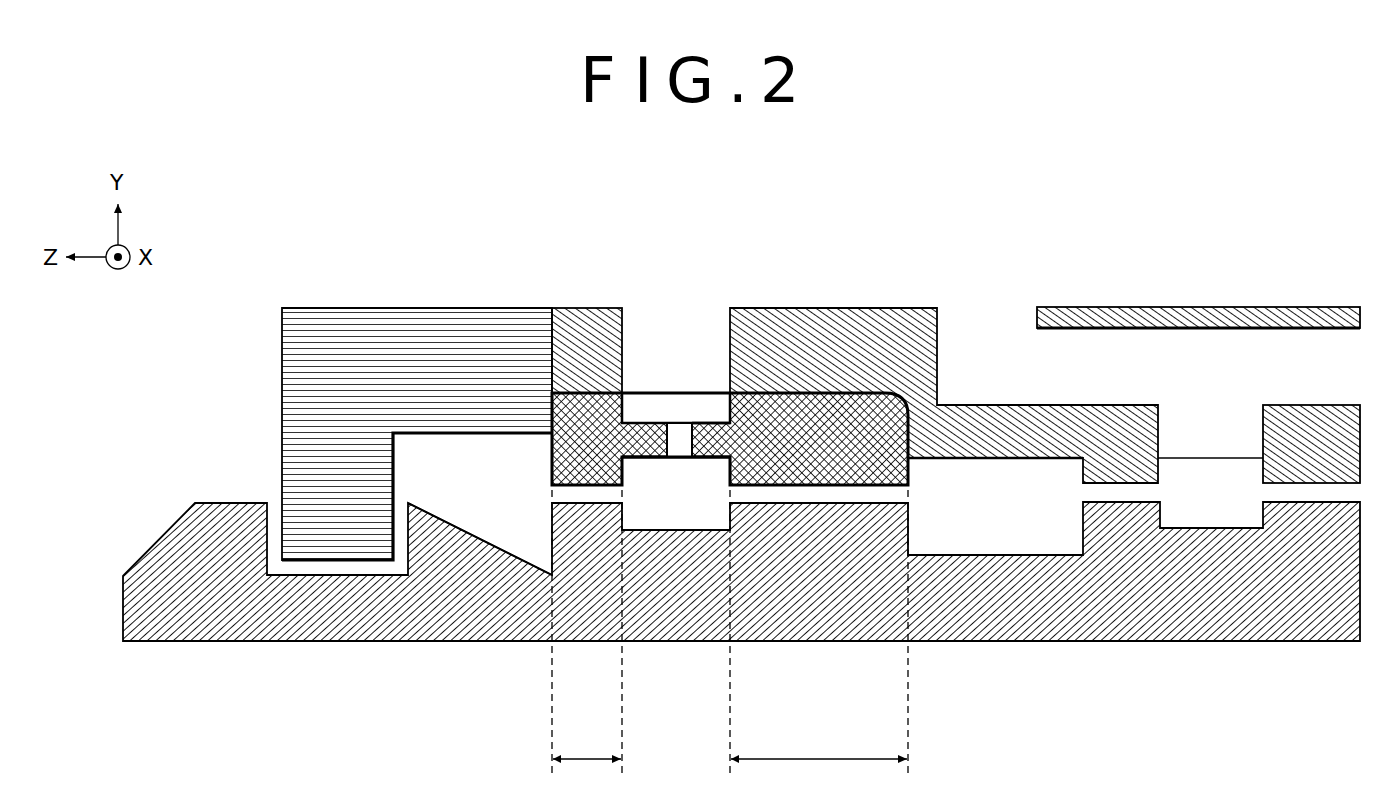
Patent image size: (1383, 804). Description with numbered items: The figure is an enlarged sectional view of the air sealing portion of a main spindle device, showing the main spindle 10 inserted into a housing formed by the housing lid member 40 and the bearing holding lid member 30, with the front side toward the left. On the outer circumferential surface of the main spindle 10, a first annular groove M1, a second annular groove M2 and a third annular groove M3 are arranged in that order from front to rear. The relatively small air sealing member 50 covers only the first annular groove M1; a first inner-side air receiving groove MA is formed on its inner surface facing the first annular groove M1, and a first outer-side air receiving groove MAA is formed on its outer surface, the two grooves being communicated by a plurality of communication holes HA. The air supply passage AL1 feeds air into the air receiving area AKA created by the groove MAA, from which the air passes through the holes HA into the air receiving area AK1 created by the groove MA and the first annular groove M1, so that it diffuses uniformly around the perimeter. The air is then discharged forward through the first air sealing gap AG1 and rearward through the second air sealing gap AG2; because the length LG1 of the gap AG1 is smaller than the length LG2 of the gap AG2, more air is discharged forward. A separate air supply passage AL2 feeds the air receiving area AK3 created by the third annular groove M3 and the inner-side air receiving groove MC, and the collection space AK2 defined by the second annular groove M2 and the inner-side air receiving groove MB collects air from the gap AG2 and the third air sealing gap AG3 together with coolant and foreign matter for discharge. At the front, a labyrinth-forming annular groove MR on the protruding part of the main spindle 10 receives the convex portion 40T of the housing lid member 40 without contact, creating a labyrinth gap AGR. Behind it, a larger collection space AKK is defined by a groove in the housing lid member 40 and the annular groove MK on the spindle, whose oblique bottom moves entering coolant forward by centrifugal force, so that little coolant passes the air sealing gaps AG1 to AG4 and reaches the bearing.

The main spindle 10 is at (188, 553).
The bearing holding lid member 30 is at (580, 310).
The housing lid member 40 is at (302, 328).
The convex portion 40T is at (332, 532).
The air sealing member 50 is at (552, 393).
The communication holes HA is at (678, 444).
The first outer-side air receiving groove MAA is at (707, 413).
The air receiving area AKA is at (675, 412).
The air supply passage AL1 is at (652, 323).
The air supply passage AL2 is at (1101, 370).
The first annular groove M1 is at (637, 520).
The second annular groove M2 is at (925, 547).
The third annular groove M3 is at (1167, 523).
The first inner-side air receiving groove MA is at (705, 465).
The inner-side air receiving groove MB is at (1045, 462).
The inner-side air receiving groove MC is at (1243, 463).
The annular groove MK is at (517, 550).
The labyrinth-forming annular groove MR is at (280, 578).
The collection space AKK is at (442, 467).
The labyrinth gap AGR is at (367, 558).
The first air sealing gap AG1 is at (575, 488).
The second air sealing gap AG2 is at (803, 488).
The third air sealing gap AG3 is at (1110, 487).
The fourth air sealing gap AG4 is at (1295, 485).
The air receiving area AK1 is at (657, 488).
The collection space AK2 is at (972, 497).
The air receiving area AK3 is at (1193, 493).
The length of the first air sealing gap LG1 is at (587, 631).
The length of the second air sealing gap LG2 is at (819, 631).